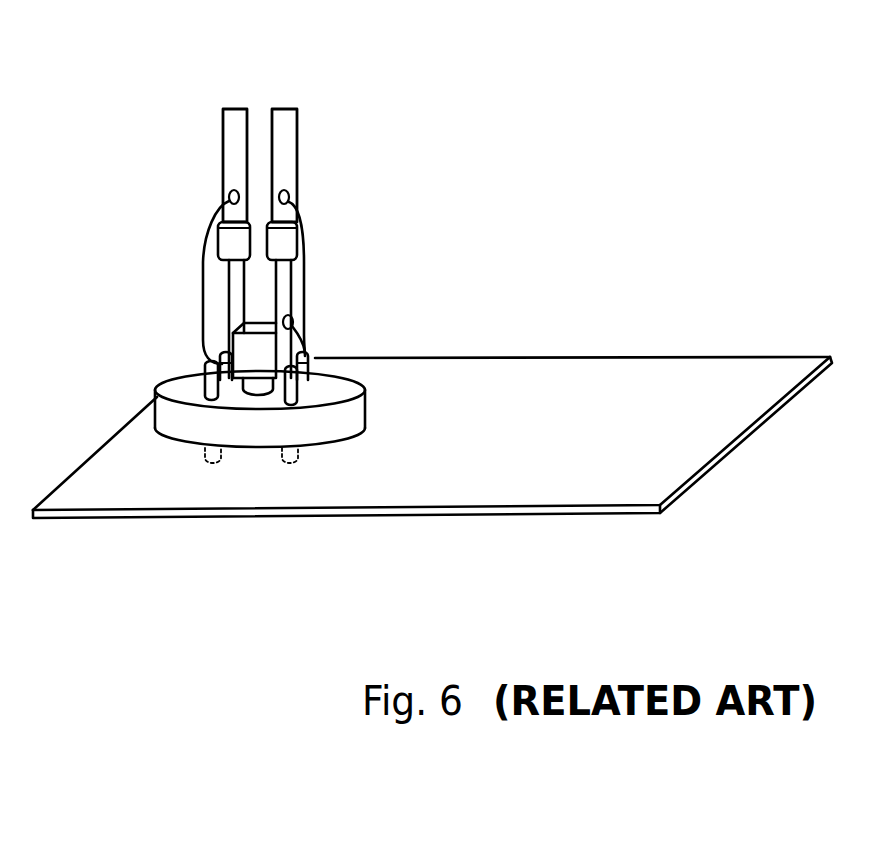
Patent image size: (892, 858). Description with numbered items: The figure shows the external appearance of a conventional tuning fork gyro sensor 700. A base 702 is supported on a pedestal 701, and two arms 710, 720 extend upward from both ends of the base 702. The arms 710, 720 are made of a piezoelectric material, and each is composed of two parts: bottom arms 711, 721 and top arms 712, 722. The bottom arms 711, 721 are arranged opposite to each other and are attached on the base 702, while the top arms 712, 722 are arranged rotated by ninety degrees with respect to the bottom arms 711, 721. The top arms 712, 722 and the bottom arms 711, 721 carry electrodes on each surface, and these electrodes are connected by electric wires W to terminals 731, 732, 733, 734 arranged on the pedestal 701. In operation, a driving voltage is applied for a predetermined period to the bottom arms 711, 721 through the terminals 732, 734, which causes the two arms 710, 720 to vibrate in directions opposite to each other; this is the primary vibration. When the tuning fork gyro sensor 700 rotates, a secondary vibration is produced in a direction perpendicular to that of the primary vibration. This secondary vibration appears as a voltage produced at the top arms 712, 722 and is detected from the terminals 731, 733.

The tuning fork gyro sensor 700 is at (402, 157).
The pedestal 701 is at (358, 410).
The base 702 is at (256, 365).
The arm 710 is at (232, 80).
The bottom arm 711 is at (235, 277).
The top arm 712 is at (228, 137).
The arm 720 is at (282, 80).
The bottom arm 721 is at (287, 273).
The top arm 722 is at (284, 137).
The terminal 731 is at (293, 403).
The terminal 732 is at (312, 373).
The terminal 733 is at (203, 395).
The terminal 734 is at (214, 363).
The electric wire W is at (203, 295).